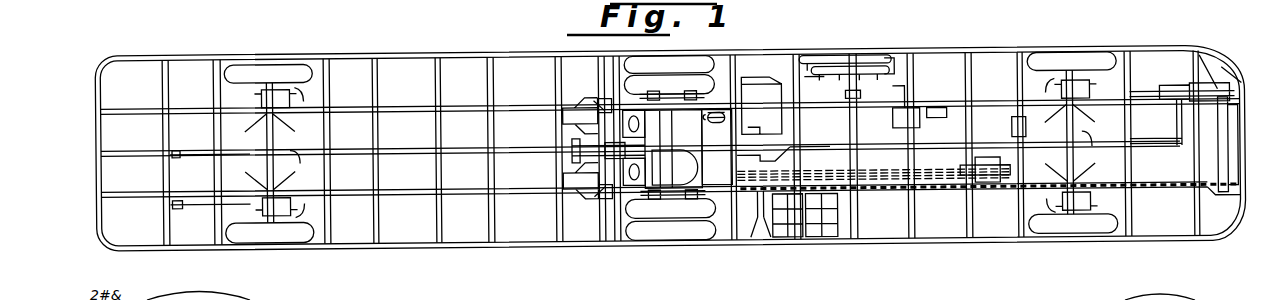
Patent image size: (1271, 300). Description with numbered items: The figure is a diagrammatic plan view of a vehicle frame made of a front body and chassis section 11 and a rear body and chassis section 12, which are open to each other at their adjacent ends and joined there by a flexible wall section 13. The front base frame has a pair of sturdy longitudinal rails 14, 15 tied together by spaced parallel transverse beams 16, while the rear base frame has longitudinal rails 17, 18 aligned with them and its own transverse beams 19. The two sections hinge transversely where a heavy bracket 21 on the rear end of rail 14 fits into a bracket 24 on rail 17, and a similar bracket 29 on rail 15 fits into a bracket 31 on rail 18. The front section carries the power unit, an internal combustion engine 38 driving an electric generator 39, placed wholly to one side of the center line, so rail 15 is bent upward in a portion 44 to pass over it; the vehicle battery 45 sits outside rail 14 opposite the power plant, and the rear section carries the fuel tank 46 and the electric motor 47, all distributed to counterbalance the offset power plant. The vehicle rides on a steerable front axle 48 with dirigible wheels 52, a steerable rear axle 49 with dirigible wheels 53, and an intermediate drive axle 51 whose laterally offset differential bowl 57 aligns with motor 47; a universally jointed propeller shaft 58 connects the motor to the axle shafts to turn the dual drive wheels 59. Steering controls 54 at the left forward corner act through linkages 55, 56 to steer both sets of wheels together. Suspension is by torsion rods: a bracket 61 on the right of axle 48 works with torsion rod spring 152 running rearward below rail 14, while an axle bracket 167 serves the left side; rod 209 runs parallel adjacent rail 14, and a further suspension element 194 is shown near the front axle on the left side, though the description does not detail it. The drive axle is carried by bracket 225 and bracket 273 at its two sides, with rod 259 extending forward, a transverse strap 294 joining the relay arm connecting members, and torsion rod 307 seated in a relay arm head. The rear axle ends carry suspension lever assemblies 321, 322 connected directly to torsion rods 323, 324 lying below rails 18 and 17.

The front body and chassis section 11 is at (956, 46).
The rear body and chassis section 12 is at (472, 61).
The flexible wall section 13 is at (613, 237).
The longitudinal rail 14 is at (1152, 187).
The longitudinal rail 15 is at (1148, 96).
The transverse beams 16 is at (1008, 211).
The longitudinal rail 17 is at (470, 192).
The longitudinal rail 18 is at (452, 108).
The transverse beams 19 is at (208, 123).
The heavy bracket 21 is at (635, 194).
The heavy bracket 24 is at (600, 192).
The bracket 29 is at (665, 92).
The bracket 31 is at (598, 100).
The internal combustion engine 38 is at (862, 60).
The electric generator 39 is at (762, 95).
The upwardly bent portion 44 is at (828, 104).
The vehicle battery 45 is at (830, 236).
The fuel tank 46 is at (406, 108).
The electric motor 47 is at (519, 146).
The front axle 48 is at (1078, 135).
The rear axle 49 is at (273, 133).
The drive axle 51 is at (672, 121).
The dirigible wheels 52 is at (1065, 236).
The dirigible wheels 53 is at (270, 240).
The steering controls 54 is at (1224, 72).
The linkage 55 is at (1090, 92).
The linkage 56 is at (194, 197).
The differential bowl 57 is at (688, 158).
The propeller shaft 58 is at (582, 158).
The dual drive wheels 59 is at (698, 235).
The bracket 61 is at (1088, 209).
The torsion rod spring 152 is at (948, 185).
The axle bracket 167 is at (1068, 78).
The shaft bearing 194 is at (1017, 131).
The rod 209 is at (993, 175).
The bracket 225 is at (690, 210).
The rod 259 is at (878, 185).
The bracket 273 is at (668, 86).
The transverse strap 294 is at (716, 160).
The torsion rod 307 is at (922, 165).
The suspension lever assembly 321 is at (262, 94).
The suspension lever assembly 322 is at (262, 212).
The torsion rod 323 is at (350, 137).
The torsion rod 324 is at (350, 205).